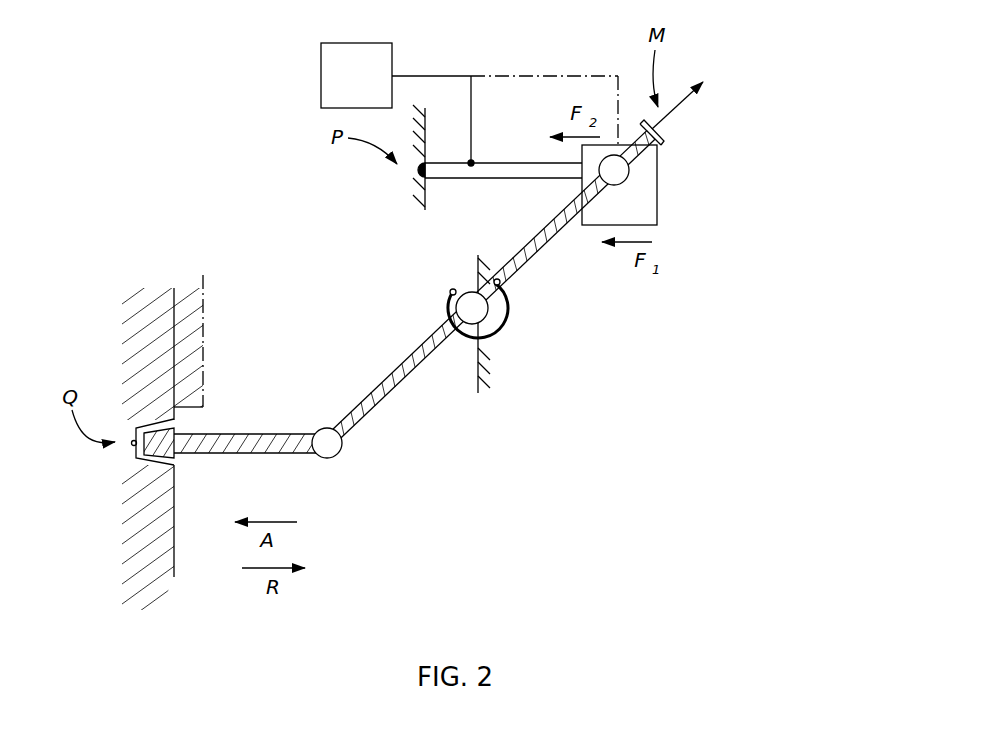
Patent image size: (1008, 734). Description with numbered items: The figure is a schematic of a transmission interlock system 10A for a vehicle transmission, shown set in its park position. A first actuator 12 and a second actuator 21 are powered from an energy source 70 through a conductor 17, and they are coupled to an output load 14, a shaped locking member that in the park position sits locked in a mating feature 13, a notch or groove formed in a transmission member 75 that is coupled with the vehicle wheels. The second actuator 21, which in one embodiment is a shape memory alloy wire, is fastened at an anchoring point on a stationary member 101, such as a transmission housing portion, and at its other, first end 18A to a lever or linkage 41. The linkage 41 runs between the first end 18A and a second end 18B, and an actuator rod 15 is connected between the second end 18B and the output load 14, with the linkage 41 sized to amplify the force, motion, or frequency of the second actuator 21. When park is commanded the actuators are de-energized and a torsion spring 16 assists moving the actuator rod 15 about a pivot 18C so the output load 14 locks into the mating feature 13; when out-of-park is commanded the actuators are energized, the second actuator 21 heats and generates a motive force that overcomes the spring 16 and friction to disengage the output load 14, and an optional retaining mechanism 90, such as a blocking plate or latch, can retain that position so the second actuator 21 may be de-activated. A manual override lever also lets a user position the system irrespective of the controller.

The transmission interlock system 10A is at (800, 108).
The first actuator 12 is at (657, 162).
The mating feature 13 is at (160, 427).
The output load 14 is at (166, 444).
The actuator rod 15 is at (233, 438).
The torsion spring 16 is at (512, 303).
The conductor 17 is at (436, 75).
The first end 18A is at (620, 183).
The second end 18B is at (333, 458).
The pivot 18C is at (481, 312).
The second actuator 21 is at (510, 163).
The linkage 41 is at (378, 387).
The energy source 70 is at (320, 69).
The transmission member 75 is at (162, 370).
The retaining mechanism 90 is at (205, 300).
The stationary member 101 is at (422, 200).